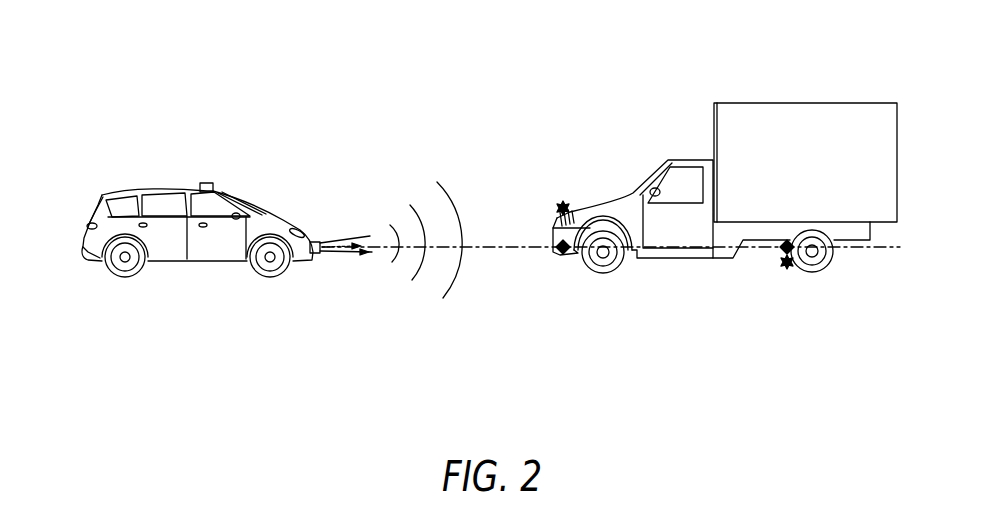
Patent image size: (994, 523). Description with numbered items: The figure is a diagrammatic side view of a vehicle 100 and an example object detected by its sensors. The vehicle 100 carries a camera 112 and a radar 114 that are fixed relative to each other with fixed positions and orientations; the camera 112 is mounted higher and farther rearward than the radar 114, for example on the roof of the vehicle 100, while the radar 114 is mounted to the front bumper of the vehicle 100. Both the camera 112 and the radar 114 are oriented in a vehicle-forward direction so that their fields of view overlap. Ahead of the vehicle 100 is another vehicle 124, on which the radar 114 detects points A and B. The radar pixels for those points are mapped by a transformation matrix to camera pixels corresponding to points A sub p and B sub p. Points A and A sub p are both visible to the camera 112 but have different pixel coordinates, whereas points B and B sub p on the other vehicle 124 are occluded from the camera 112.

The vehicle 100 is at (87, 204).
The camera 112 is at (209, 182).
The radar 114 is at (316, 242).
The another vehicle 124 is at (863, 103).